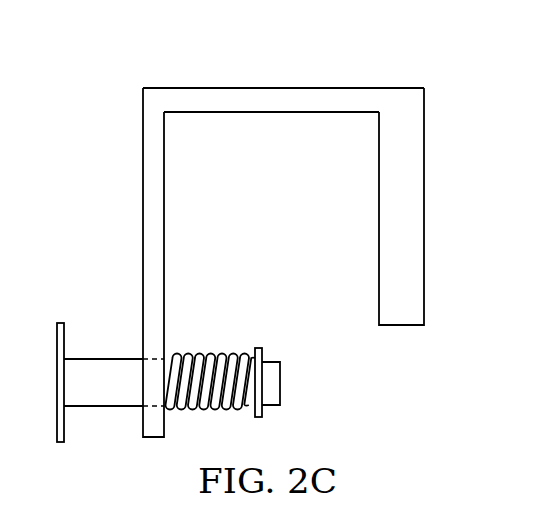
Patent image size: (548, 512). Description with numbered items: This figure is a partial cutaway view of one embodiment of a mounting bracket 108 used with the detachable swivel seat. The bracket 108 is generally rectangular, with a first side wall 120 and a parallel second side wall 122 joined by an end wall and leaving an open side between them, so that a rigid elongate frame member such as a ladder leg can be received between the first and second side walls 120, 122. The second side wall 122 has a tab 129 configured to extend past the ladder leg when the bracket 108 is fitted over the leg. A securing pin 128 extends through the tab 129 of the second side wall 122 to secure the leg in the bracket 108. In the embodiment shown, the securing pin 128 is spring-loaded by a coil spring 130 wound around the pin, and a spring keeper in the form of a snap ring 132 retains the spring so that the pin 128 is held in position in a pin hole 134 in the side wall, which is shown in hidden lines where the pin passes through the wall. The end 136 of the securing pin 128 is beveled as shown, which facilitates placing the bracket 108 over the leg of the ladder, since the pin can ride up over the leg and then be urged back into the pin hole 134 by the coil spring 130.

The mounting bracket 108 is at (283, 229).
The first side wall 120 is at (424, 207).
The second side wall 122 is at (143, 183).
The securing pin 128 is at (60, 323).
The tab 129 is at (150, 437).
The coil spring 130 is at (215, 356).
The snap ring 132 is at (262, 353).
The pin hole 134 is at (148, 359).
The end of pin 136 is at (281, 383).